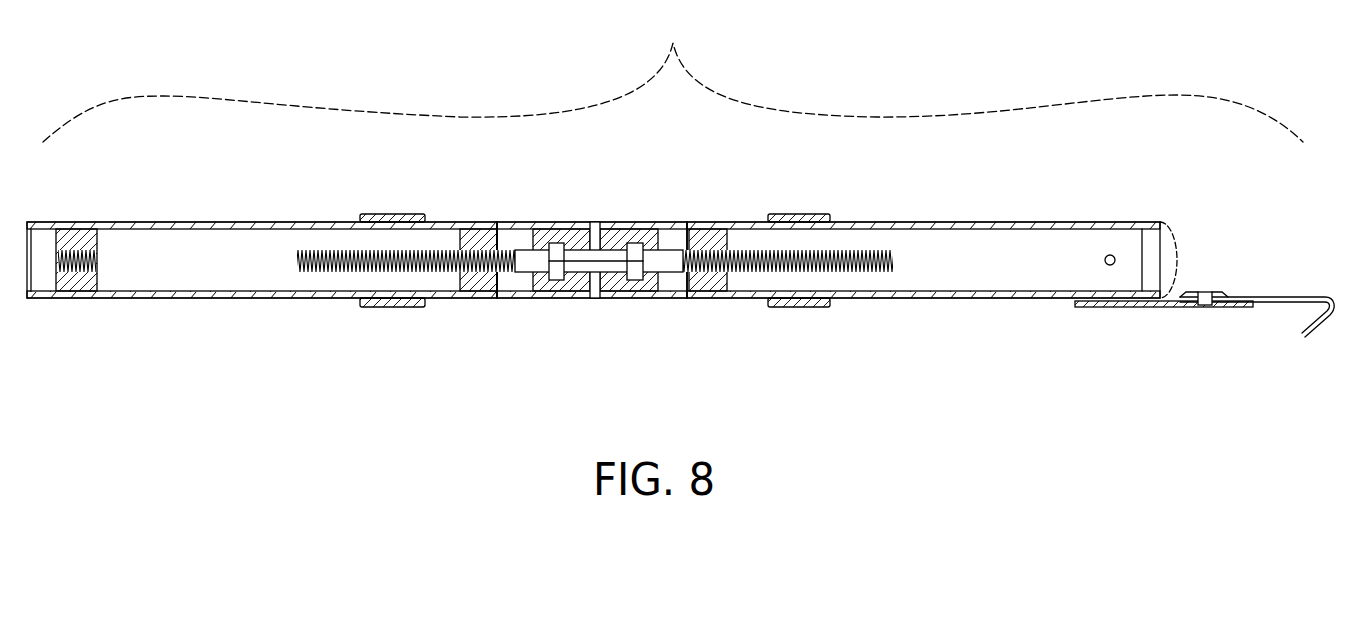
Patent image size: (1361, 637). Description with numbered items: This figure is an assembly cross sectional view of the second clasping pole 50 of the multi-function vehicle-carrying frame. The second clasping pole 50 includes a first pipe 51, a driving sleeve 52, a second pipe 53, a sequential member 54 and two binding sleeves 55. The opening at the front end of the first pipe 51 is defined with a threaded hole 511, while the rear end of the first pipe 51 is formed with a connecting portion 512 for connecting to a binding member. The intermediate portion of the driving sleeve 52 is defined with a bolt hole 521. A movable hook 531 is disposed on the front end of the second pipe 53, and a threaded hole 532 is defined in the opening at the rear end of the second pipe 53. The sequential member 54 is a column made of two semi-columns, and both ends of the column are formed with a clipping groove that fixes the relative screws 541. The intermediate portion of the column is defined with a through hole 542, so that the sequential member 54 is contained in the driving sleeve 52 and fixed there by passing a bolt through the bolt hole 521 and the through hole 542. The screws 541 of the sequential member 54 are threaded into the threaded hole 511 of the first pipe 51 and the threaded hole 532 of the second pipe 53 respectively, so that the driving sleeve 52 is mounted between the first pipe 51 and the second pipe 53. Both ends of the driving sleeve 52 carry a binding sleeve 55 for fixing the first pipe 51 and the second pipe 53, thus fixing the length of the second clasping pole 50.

The second clasping pole 50 is at (673, 79).
The first pipe 51 is at (317, 222).
The threaded hole 511 is at (478, 268).
The connecting portion 512 is at (80, 288).
The driving sleeve 52 is at (657, 300).
The bolt hole 521 is at (610, 224).
The second pipe 53 is at (907, 227).
The movable hook 531 is at (1222, 294).
The threaded hole 532 is at (696, 222).
The sequential member 54 is at (575, 292).
The screws 541 is at (436, 228).
The through hole 542 is at (583, 222).
The binding sleeve 55 is at (810, 214).